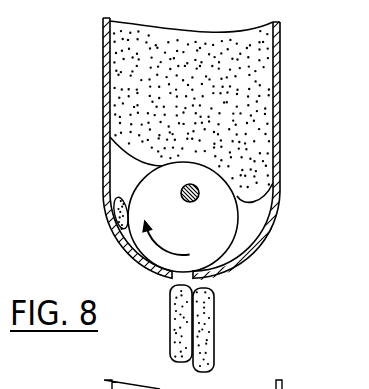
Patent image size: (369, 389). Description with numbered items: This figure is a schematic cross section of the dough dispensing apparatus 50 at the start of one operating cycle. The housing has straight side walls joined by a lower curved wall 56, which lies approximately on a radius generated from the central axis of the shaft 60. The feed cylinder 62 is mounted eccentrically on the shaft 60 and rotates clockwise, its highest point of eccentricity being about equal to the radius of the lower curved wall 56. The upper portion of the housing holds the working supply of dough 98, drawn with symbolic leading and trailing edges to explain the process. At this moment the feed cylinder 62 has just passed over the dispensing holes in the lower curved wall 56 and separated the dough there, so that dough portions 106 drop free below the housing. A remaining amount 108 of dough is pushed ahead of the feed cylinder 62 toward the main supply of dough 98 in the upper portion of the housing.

The apparatus for dispensing dough 50 is at (103, 75).
The dough 98 is at (220, 72).
The remaining amount of dough 108 is at (118, 215).
The lower curved wall 56 is at (118, 240).
The shaft 60 is at (199, 193).
The feed cylinder 62 is at (225, 229).
The dough portions 106 is at (204, 313).